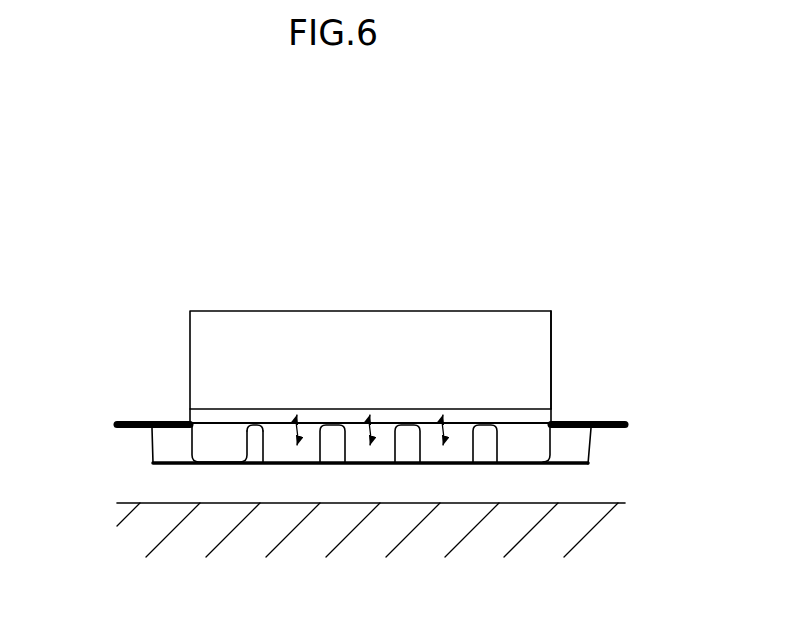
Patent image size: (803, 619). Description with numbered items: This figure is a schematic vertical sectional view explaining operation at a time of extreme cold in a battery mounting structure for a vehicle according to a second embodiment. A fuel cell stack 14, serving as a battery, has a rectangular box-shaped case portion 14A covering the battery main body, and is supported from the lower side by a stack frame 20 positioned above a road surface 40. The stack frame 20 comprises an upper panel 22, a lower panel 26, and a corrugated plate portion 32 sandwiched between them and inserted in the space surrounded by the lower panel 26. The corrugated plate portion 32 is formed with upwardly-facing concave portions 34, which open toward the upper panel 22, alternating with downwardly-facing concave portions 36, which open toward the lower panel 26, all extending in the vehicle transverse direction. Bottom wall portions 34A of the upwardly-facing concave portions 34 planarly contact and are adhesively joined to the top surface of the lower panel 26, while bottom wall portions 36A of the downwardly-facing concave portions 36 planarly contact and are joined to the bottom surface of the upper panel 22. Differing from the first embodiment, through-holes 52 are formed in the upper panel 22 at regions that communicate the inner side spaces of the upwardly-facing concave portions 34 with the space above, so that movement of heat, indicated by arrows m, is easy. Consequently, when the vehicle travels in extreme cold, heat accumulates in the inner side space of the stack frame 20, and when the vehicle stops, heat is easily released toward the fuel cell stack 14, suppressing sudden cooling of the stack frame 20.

The fuel cell stack 14 is at (471, 303).
The case portion 14A is at (547, 350).
The upper panel 22 is at (225, 408).
The stack frame 20 is at (110, 437).
The corrugated plate portion 32 is at (174, 445).
The lower panel 26 is at (574, 475).
The bottom wall portion 34A is at (217, 462).
The upwardly-facing concave portion 34 is at (279, 452).
The downwardly-facing concave portion 36 is at (250, 446).
The bottom wall portion 36A is at (262, 446).
The through-hole 52 is at (298, 413).
The arrows m is at (300, 437).
The road surface 40 is at (157, 503).